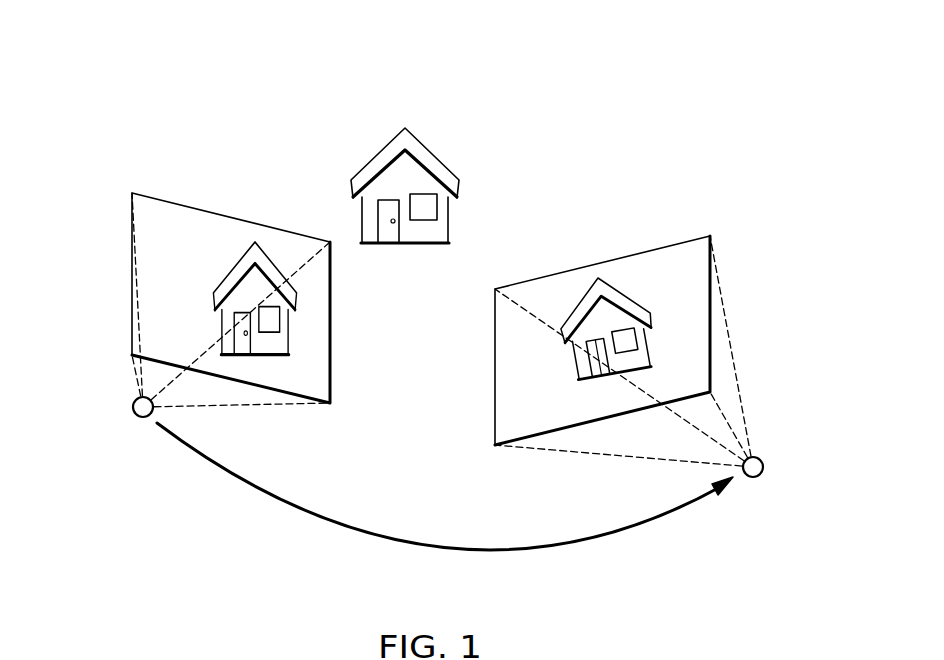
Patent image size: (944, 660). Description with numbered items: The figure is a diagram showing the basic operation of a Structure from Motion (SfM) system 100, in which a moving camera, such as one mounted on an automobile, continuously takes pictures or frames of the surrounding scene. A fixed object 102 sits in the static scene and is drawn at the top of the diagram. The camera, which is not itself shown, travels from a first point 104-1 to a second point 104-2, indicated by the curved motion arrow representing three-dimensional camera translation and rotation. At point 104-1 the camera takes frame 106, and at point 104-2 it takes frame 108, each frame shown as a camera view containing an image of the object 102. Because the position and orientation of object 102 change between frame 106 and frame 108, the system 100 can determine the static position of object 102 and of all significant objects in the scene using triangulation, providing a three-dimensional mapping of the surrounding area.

The Structure from Motion (SfM) system 100 is at (650, 77).
The fixed object 102 is at (378, 155).
The point 104-1 is at (132, 408).
The point 104-2 is at (763, 470).
The frame 106 is at (330, 322).
The frame 108 is at (493, 367).